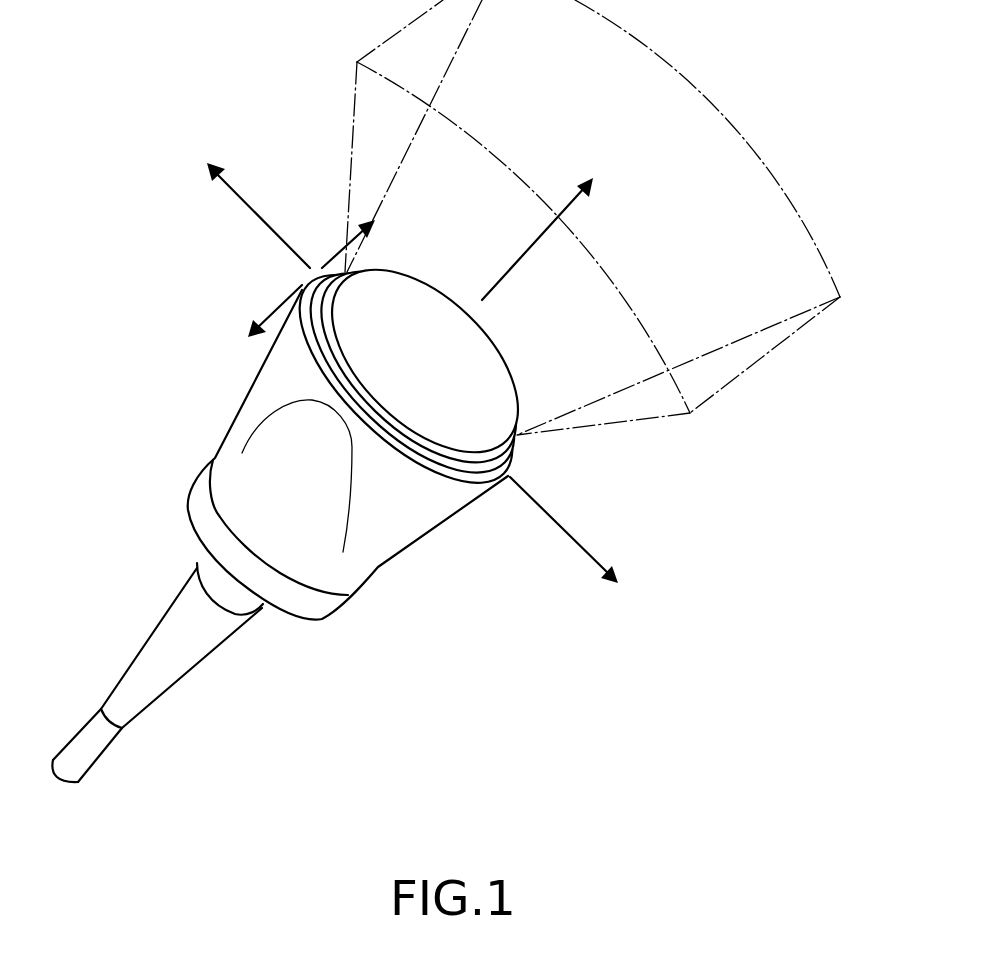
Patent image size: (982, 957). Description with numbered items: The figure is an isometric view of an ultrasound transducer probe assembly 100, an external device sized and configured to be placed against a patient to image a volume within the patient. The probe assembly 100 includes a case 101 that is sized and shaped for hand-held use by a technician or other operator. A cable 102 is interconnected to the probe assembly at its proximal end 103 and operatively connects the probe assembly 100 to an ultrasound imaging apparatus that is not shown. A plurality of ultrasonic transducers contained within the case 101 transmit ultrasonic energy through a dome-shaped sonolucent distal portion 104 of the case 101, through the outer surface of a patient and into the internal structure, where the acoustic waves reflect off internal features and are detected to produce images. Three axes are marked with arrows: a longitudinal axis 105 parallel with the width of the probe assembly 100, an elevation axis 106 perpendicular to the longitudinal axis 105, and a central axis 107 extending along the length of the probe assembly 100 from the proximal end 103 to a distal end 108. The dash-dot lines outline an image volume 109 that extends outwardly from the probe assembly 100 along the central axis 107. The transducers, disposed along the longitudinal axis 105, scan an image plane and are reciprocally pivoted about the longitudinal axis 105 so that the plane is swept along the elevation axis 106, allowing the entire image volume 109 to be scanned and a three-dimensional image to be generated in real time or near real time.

The ultrasound transducer probe assembly 100 is at (330, 485).
The case 101 is at (412, 546).
The cable 102 is at (110, 748).
The proximal end 103 is at (272, 630).
The sonolucent distal portion 104 is at (503, 359).
The longitudinal axis 105 is at (533, 498).
The elevation axis 106 is at (277, 312).
The central axis 107 is at (570, 207).
The distal end 108 is at (463, 286).
The image volume 109 is at (663, 415).